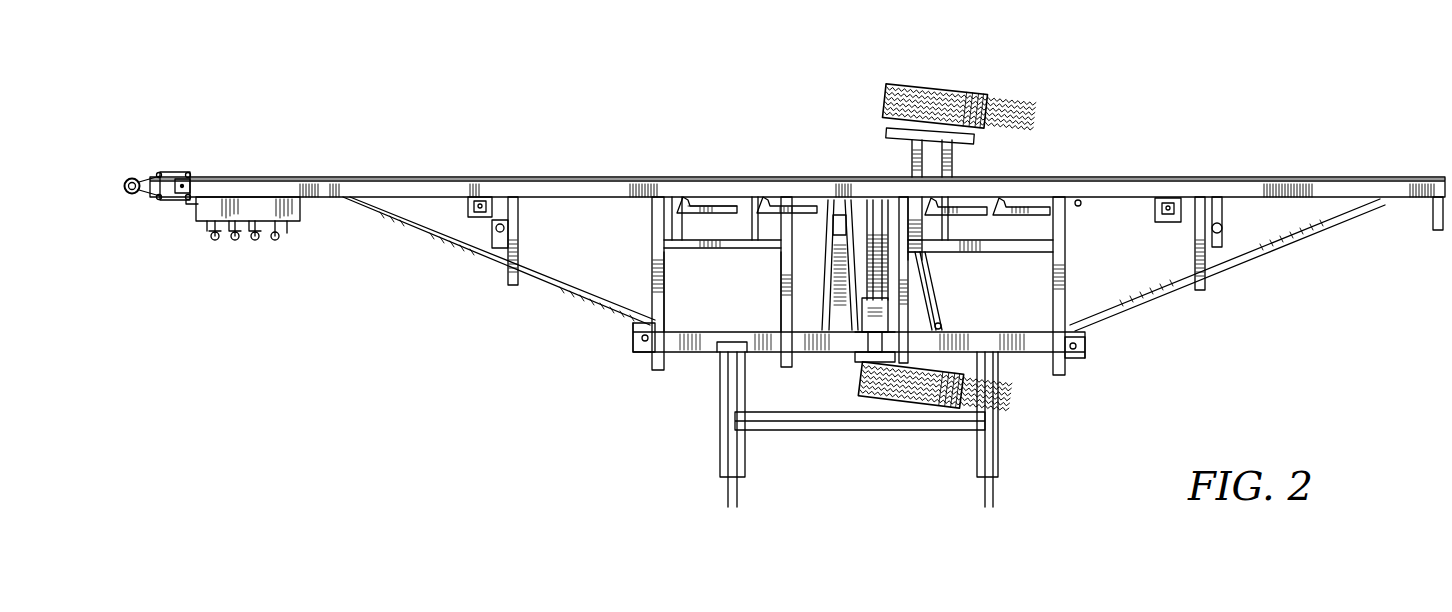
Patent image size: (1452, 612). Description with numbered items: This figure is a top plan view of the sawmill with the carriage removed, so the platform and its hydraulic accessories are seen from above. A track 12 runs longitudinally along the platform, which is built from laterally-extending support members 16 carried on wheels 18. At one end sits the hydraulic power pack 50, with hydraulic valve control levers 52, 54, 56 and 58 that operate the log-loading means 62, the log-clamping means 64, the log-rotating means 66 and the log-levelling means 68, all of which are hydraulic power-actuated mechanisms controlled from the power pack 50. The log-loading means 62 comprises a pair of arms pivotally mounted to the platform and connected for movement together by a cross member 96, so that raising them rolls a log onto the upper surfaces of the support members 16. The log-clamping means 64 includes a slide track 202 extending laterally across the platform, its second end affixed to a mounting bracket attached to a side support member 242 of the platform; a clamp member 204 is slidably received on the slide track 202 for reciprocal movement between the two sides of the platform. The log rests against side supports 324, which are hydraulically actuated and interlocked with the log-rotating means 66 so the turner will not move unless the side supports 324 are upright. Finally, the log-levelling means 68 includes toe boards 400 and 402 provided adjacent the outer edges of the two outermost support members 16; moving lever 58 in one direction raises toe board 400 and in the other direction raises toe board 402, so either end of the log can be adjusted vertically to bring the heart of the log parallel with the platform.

The track 12 is at (599, 175).
The laterally-extending support members 16 is at (519, 238).
The wheels 18 is at (918, 401).
The hydraulic power pack 50 is at (196, 207).
The hydraulic valve control lever 52 is at (213, 241).
The hydraulic valve control lever 54 is at (236, 241).
The hydraulic valve control lever 56 is at (257, 241).
The hydraulic valve control lever 58 is at (279, 238).
The log-loading means 62 is at (697, 410).
The log-clamping means 64 is at (877, 192).
The log-rotating means 66 is at (838, 342).
The log-levelling means 68 is at (485, 331).
The cross member 96 is at (824, 431).
The slide track 202 is at (862, 204).
The clamp member 204 is at (866, 331).
The side support member 242 is at (1019, 346).
The side supports 324 is at (780, 207).
The toe board 400 is at (496, 232).
The toe board 402 is at (1223, 231).